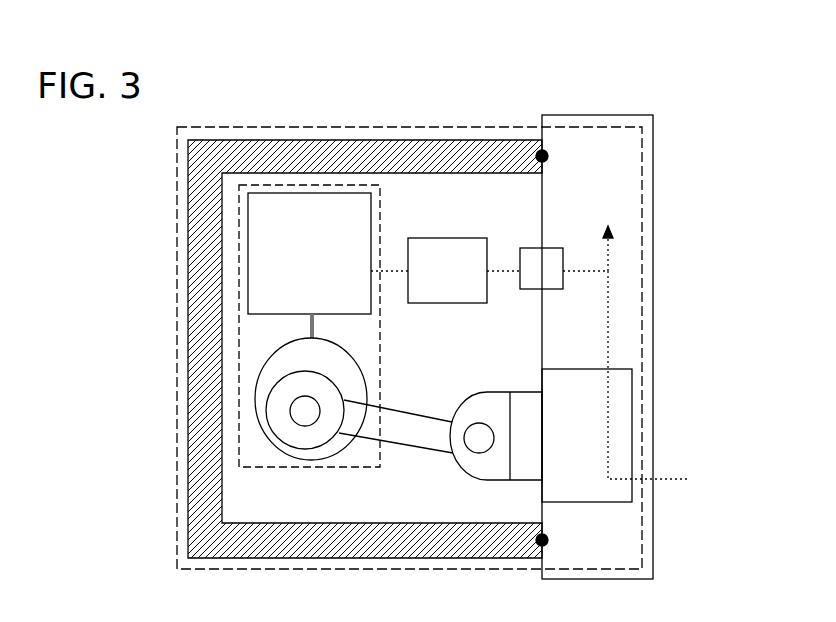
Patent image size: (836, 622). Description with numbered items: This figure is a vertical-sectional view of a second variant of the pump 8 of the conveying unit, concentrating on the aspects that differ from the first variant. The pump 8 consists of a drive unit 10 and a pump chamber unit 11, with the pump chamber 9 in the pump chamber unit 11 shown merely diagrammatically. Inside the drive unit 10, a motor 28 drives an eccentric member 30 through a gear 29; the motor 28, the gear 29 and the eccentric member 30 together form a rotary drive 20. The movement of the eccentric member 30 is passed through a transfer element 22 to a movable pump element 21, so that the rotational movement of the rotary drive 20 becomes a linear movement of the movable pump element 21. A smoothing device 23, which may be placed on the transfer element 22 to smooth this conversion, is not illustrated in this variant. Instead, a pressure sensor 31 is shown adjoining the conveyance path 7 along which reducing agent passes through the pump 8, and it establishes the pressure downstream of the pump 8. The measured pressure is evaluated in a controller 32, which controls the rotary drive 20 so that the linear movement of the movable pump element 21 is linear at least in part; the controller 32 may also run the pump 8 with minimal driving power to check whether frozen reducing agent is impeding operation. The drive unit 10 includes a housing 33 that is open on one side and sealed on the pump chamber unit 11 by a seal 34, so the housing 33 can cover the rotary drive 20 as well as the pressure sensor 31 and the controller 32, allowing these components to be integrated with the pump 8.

The conveyance path 7 is at (667, 480).
The pump 8 is at (643, 130).
The pump chamber 9 is at (632, 435).
The drive unit 10 is at (350, 120).
The pump chamber unit 11 is at (645, 86).
The rotary drive 20 is at (237, 297).
The movable pump element 21 is at (492, 480).
The transfer element 22 is at (448, 455).
The smoothing device 23 is at (433, 238).
The motor 28 is at (277, 193).
The gear 29 is at (300, 323).
The eccentric member 30 is at (267, 437).
The pressure sensor 31 is at (563, 248).
The controller 32 is at (453, 238).
The housing 33 is at (418, 138).
The seal 34 is at (539, 152).